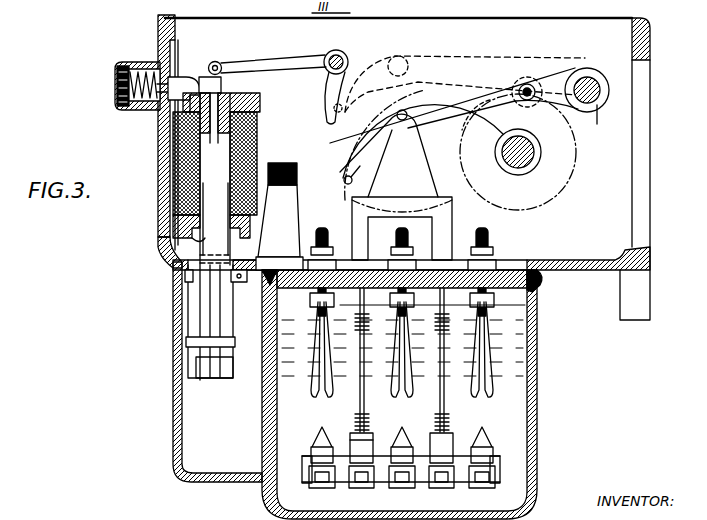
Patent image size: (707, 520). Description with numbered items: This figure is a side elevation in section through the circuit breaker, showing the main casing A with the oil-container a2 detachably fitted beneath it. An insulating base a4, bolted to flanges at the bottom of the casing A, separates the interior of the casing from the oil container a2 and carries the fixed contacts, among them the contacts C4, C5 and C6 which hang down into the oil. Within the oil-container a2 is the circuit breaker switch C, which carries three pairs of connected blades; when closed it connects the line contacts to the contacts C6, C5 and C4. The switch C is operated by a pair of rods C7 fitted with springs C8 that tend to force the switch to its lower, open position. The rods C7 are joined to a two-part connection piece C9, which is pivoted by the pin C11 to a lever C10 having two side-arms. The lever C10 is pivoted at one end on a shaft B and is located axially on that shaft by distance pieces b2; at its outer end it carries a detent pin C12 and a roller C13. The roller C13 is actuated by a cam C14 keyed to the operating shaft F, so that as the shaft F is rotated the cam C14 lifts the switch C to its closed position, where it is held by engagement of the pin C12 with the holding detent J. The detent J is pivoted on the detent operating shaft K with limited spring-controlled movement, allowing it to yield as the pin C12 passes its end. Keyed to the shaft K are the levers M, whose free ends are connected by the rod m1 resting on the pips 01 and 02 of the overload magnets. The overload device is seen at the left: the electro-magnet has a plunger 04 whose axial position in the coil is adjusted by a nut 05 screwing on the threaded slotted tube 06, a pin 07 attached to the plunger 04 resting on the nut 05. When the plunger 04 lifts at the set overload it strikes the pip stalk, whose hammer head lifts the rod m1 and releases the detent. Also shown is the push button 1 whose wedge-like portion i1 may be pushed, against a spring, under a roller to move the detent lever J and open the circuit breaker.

The main casing A is at (163, 245).
The adjusting screw plug 1 is at (115, 88).
The wedge like portion i1 is at (180, 80).
The rod m1 is at (214, 61).
The lever M is at (260, 62).
The detent operating shaft K is at (343, 55).
The holding detent J is at (322, 99).
The pip 01 is at (249, 105).
The pip 02 is at (173, 148).
The plunger 04 is at (197, 211).
The slotted tube 06 is at (200, 288).
The pin 07 is at (190, 341).
The nut 05 is at (192, 358).
The oil-container a2 is at (537, 430).
The insulating base a4 is at (536, 297).
The contact C4 is at (317, 384).
The contact C5 is at (395, 386).
The contact C6 is at (488, 375).
The rod C7 is at (364, 378).
The circuit breaker switch C is at (312, 430).
The spring C8 is at (353, 422).
The two-part connection piece C9 is at (446, 206).
The lever C10 is at (495, 88).
The pin C11 is at (401, 121).
The detent pin C12 is at (347, 184).
The roller C13 is at (522, 80).
The cam C14 is at (505, 125).
The shaft B is at (594, 78).
The distance piece b2 is at (602, 125).
The operating shaft F is at (526, 152).